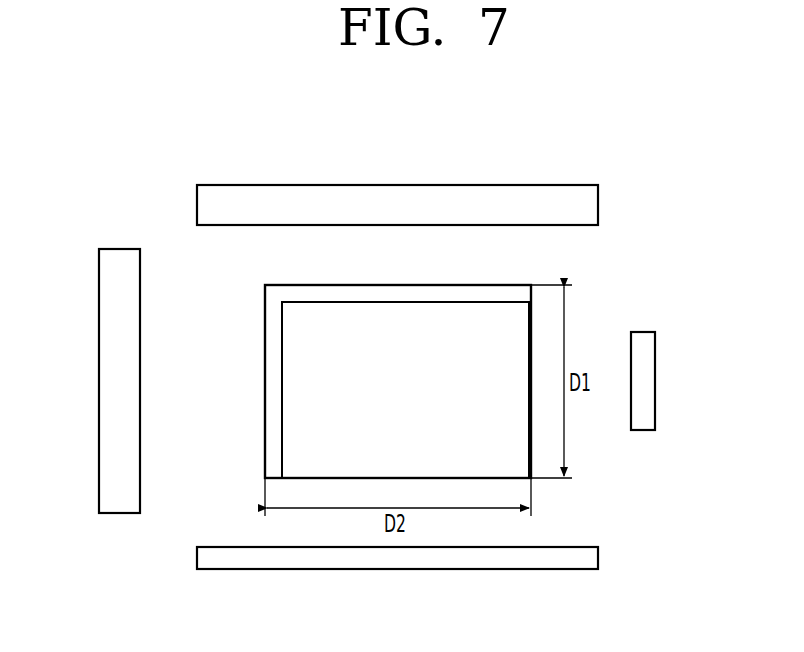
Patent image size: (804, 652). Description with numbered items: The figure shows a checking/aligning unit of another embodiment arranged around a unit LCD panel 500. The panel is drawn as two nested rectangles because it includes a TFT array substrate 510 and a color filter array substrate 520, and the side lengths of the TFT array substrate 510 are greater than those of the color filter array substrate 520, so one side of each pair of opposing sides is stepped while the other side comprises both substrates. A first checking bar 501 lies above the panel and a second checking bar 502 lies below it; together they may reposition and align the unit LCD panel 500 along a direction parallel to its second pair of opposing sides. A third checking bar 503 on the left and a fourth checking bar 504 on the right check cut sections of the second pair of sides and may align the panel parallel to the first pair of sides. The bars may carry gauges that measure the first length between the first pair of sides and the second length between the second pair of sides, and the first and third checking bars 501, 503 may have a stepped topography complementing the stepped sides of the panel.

The unit LCD panel 500 is at (343, 381).
The first checking bar 501 is at (411, 190).
The second checking bar 502 is at (412, 569).
The third checking bar 503 is at (103, 382).
The fourth checking bar 504 is at (652, 380).
The TFT array substrate 510 is at (269, 367).
The color filter array substrate 520 is at (290, 408).